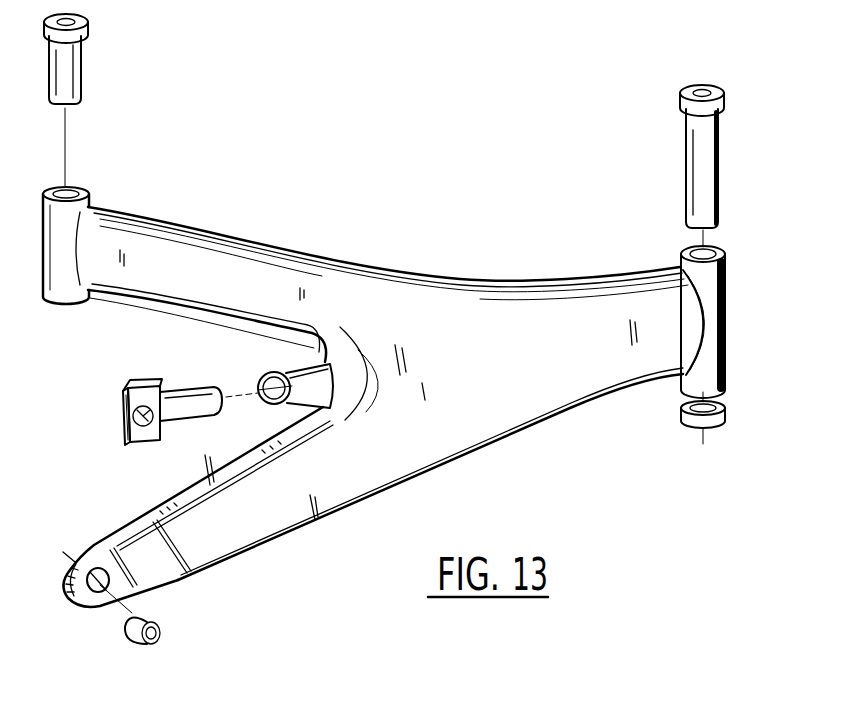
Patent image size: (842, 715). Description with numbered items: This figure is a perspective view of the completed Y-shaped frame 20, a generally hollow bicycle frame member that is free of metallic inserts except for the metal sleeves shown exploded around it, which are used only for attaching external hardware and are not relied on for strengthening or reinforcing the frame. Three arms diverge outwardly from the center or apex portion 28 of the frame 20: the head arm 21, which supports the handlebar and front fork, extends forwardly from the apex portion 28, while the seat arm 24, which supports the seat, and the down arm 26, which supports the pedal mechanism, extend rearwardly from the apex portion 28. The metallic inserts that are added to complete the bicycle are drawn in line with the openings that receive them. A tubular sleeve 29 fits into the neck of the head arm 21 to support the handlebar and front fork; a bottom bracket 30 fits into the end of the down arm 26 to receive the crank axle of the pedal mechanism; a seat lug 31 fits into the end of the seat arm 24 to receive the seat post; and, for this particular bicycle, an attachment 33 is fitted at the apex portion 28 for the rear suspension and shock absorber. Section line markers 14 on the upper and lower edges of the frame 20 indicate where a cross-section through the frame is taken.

The section line for FIG. 14 is at (408, 237).
The Y-shaped frame 20 is at (384, 373).
The head arm 21 is at (620, 373).
The seat arm 24 is at (187, 237).
The down arm 26 is at (230, 545).
The apex portion 28 is at (487, 410).
The tubular sleeve 29 is at (723, 119).
The bottom bracket 30 is at (135, 643).
The seat lug 31 is at (72, 74).
The attachment 33 is at (123, 396).